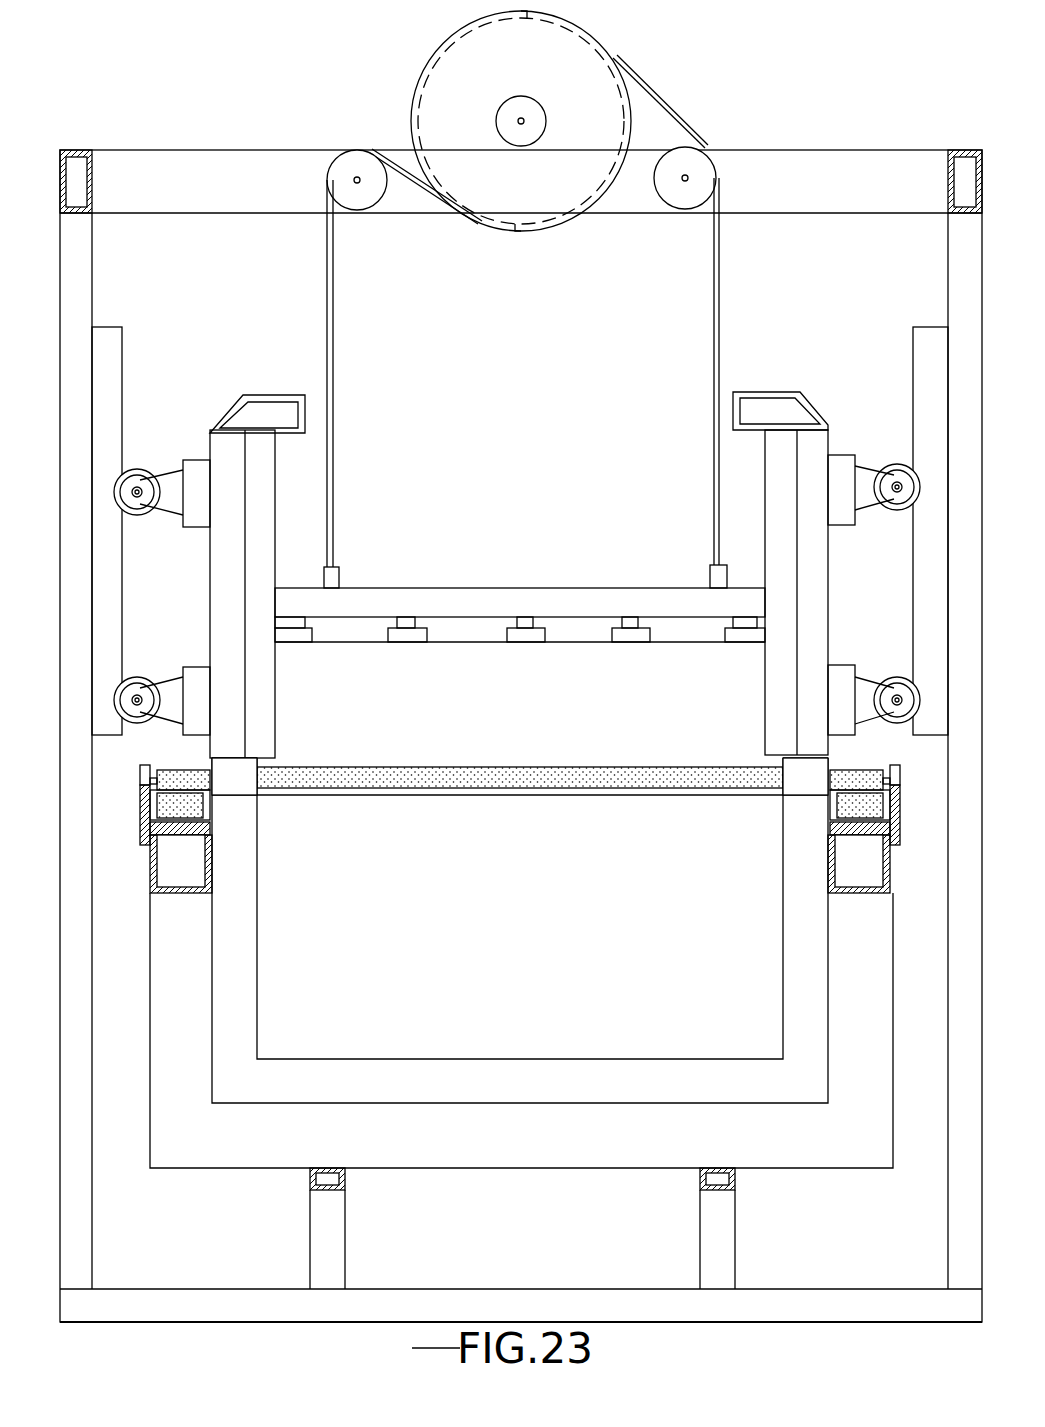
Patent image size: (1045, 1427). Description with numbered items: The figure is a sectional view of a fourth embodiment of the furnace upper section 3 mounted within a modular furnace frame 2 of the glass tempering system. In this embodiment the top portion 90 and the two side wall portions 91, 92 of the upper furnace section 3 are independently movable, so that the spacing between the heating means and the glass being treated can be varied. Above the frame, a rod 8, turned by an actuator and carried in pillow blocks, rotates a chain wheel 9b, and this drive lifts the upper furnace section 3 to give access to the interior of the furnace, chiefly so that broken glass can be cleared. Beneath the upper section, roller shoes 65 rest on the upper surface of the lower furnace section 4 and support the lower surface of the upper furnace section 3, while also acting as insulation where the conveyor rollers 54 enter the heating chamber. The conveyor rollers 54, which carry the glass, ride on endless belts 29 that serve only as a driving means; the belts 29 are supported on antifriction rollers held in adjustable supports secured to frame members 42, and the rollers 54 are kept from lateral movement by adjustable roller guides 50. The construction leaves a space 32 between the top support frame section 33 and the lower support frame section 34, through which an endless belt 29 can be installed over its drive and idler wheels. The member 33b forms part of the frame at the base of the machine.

The modular furnace frame 2 is at (767, 120).
The chain wheel 9b is at (573, 50).
The rod 8 is at (540, 122).
The upper furnace section 3 is at (517, 543).
The side wall portion 91 is at (265, 560).
The side wall portion 92 is at (782, 532).
The top portion 90 is at (560, 597).
The conveyor roller 54 is at (575, 768).
The roller shoe 65 is at (250, 778).
The endless belt 29 is at (175, 790).
The adjustable roller guide 50 is at (150, 828).
The frame member 42 is at (165, 870).
The space 32 is at (122, 980).
The lower support frame section 34 is at (172, 1050).
The top support frame section 33 is at (78, 1046).
The lower furnace section 4 is at (265, 1182).
The bottom beam 33b is at (283, 1308).